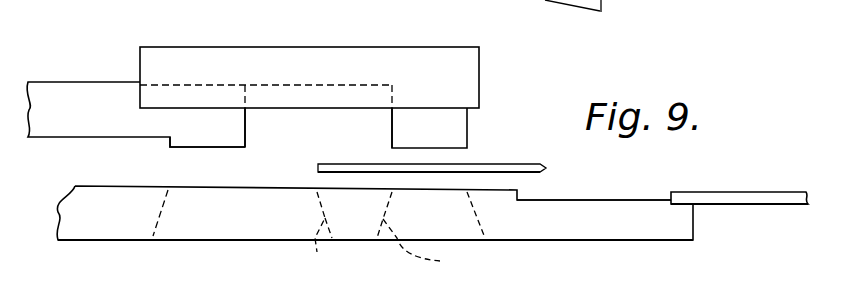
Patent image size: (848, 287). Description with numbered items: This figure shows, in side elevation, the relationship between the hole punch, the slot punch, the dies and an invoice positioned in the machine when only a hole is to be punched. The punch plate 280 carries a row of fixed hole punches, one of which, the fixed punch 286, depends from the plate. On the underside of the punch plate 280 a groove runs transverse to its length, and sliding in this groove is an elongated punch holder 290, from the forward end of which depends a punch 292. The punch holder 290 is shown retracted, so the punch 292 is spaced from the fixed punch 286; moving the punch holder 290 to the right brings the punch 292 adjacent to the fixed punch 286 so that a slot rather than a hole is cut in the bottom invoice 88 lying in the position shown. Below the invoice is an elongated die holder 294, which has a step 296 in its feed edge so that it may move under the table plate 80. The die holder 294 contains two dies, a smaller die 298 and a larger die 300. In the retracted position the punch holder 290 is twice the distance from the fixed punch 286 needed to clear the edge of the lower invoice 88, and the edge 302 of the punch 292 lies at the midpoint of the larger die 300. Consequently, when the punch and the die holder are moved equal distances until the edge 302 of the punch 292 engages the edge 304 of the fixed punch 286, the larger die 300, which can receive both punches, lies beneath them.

The table plate 80 is at (746, 196).
The bottom invoice 88 is at (520, 164).
The punch plate 280 is at (280, 48).
The fixed hole punch 286 is at (463, 124).
The punch holder 290 is at (67, 90).
The punch 292 is at (178, 148).
The die holder 294 is at (95, 222).
The step 296 is at (630, 200).
The smaller die 298 is at (431, 234).
The larger die 300 is at (325, 234).
The edge of the punch 302 is at (245, 133).
The edge of the punch 304 is at (392, 133).